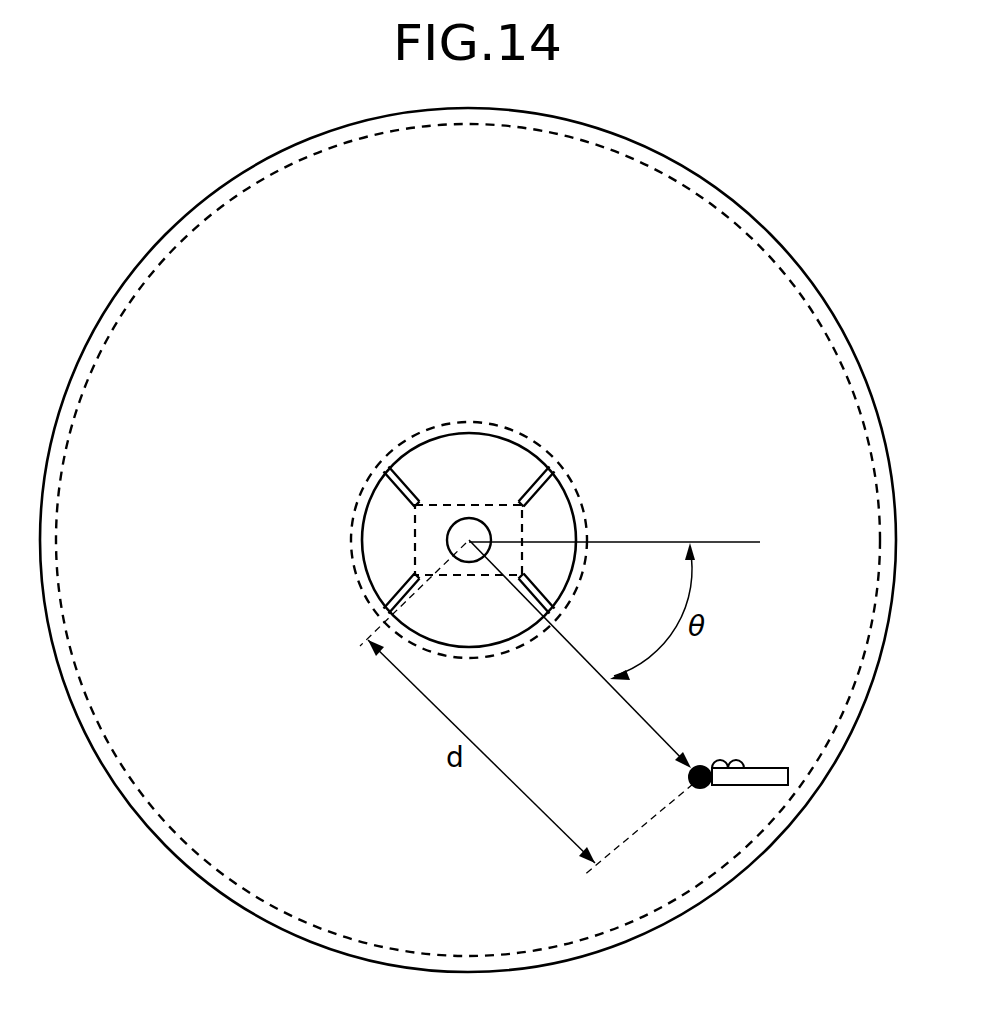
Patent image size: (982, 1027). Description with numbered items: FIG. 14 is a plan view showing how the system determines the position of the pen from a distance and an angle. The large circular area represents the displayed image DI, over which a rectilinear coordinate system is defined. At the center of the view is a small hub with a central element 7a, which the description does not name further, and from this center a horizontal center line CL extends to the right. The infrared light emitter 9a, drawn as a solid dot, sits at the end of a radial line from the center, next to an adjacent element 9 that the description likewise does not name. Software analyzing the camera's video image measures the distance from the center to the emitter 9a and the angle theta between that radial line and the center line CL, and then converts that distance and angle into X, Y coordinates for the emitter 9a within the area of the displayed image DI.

The displayed image DI is at (698, 250).
The center line CL is at (622, 540).
The hub center hole 7a is at (466, 520).
The infrared light emitter 9a is at (699, 764).
The sensor 9 is at (762, 767).